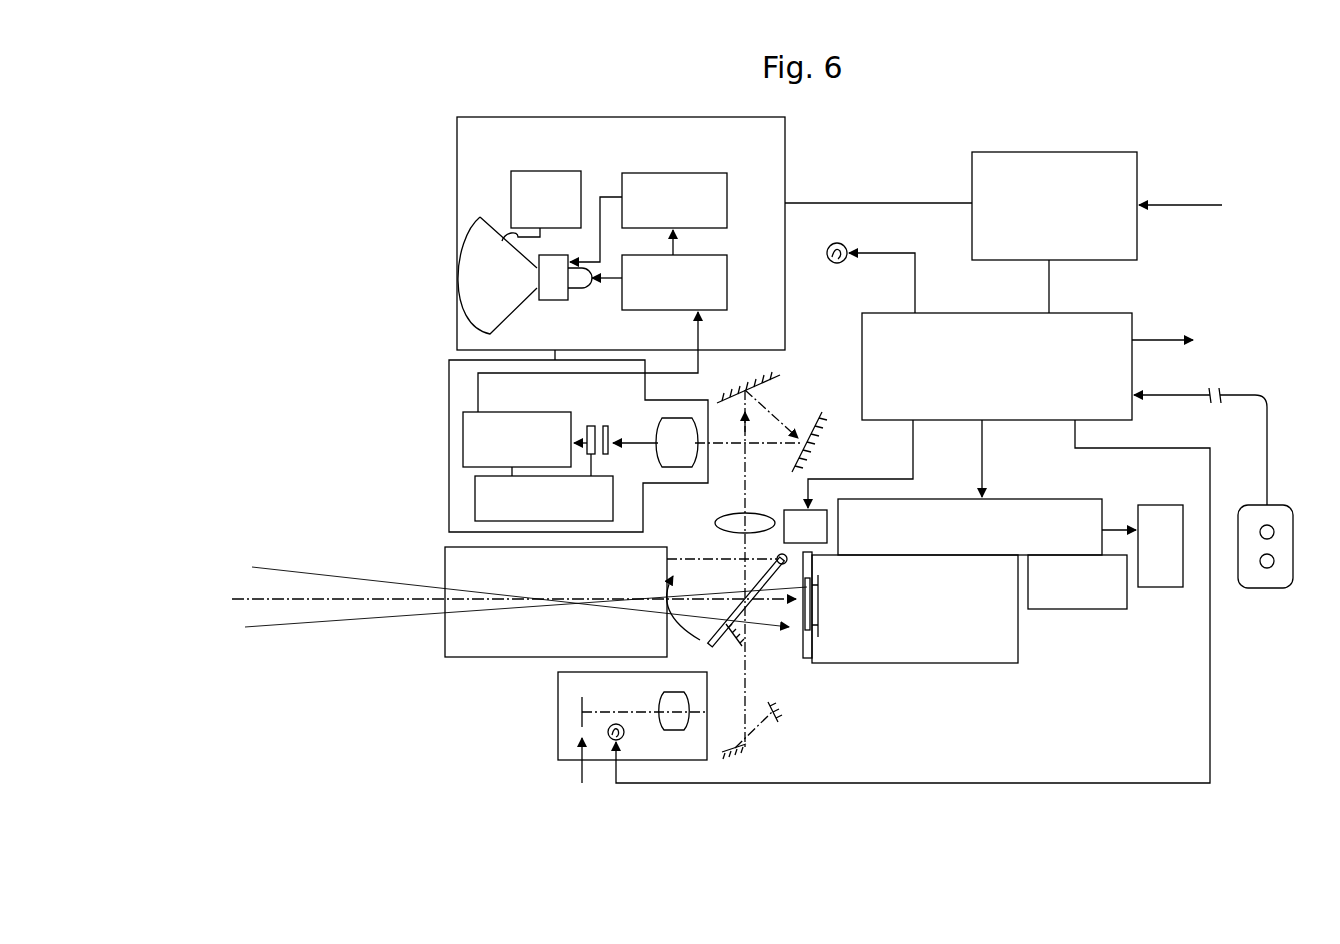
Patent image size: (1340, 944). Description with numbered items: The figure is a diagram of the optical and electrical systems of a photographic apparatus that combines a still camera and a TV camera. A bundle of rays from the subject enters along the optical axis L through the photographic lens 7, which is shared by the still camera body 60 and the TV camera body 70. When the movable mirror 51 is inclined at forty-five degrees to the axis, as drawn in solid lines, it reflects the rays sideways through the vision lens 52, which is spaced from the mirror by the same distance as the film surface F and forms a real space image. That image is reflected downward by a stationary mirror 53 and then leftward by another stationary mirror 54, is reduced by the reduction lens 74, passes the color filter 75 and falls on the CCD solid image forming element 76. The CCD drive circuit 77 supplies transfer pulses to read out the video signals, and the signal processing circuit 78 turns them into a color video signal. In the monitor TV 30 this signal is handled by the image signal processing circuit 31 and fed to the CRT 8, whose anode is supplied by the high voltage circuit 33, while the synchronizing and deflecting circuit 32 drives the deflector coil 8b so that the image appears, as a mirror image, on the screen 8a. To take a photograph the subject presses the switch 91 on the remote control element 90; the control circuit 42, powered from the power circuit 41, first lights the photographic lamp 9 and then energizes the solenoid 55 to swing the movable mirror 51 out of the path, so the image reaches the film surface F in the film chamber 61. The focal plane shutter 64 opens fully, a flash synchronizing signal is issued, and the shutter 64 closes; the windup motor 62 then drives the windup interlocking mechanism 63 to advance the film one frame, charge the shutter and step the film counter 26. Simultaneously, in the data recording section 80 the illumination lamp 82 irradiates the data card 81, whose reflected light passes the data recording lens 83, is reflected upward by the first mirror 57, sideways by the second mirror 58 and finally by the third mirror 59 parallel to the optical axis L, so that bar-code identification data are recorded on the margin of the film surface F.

The monitor TV 30 is at (457, 184).
The high voltage circuit 33 is at (555, 171).
The synchronizing and deflecting circuit 32 is at (700, 173).
The image signal processing circuit 31 is at (727, 280).
The screen 8a is at (457, 270).
The CRT 8 is at (508, 313).
The deflector coil 8b is at (560, 302).
The TV camera body 70 is at (449, 383).
The signal processing circuit 78 is at (463, 443).
The CCD drive circuit 77 is at (475, 500).
The solid image forming element 76 is at (590, 426).
The color filter 75 is at (606, 426).
The reduction lens 74 is at (678, 467).
The stationary mirror 53 is at (770, 380).
The stationary mirror 54 is at (822, 432).
The vision lens 52 is at (735, 513).
The solenoid 55 is at (790, 510).
The photographic lamp 9 is at (835, 265).
The power circuit 41 is at (1080, 152).
The control circuit 42 is at (1115, 313).
The windup interlocking mechanism 63 is at (1035, 499).
The film chamber 61 is at (935, 663).
The still camera body 60 is at (1022, 672).
The windup motor 62 is at (1068, 609).
The film counter 26 is at (1162, 587).
The remote control element 90 is at (1263, 588).
The switch 91 is at (1274, 532).
The film surface F is at (820, 612).
The focal plane shutter 64 is at (802, 624).
The movable mirror 51 is at (708, 640).
The third mirror 59 is at (736, 640).
The optical axis L is at (509, 597).
The photographic lens 7 is at (462, 657).
The data recording section 80 is at (558, 685).
The data card 81 is at (578, 717).
The data recording lens 83 is at (660, 700).
The illumination lamp 82 is at (625, 732).
The second mirror 58 is at (748, 751).
The first mirror 57 is at (782, 717).